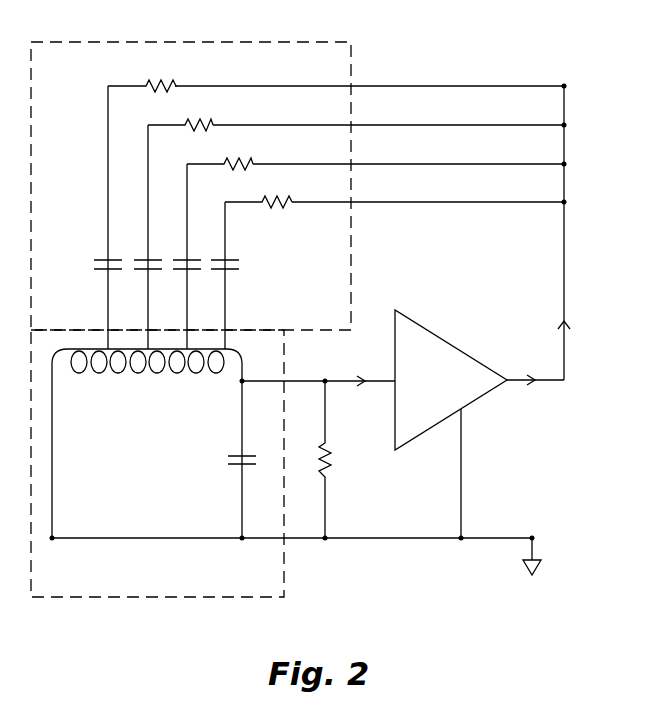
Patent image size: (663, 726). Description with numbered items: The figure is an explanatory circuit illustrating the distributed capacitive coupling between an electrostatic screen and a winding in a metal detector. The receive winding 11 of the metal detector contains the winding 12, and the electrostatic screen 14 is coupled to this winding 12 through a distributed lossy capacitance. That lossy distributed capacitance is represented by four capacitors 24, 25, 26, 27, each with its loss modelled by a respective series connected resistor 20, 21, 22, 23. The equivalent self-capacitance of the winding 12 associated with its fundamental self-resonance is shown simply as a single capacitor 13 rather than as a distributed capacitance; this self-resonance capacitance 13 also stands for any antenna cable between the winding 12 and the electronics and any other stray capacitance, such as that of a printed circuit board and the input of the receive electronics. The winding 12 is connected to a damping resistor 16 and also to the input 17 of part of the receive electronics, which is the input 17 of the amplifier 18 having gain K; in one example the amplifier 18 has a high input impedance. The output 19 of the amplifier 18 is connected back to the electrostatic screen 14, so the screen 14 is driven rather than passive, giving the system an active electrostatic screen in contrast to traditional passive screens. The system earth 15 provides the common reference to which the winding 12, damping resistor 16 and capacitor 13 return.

The receive winding 11 is at (110, 597).
The winding 12 is at (155, 372).
The capacitor 13 is at (232, 455).
The electrostatic screen 14 is at (352, 70).
The system earth 15 is at (536, 568).
The damping resistor 16 is at (331, 462).
The input 17 is at (300, 380).
The amplifier 18 is at (455, 343).
The output 19 is at (568, 348).
The resistor 20 is at (282, 198).
The resistor 21 is at (243, 160).
The resistor 22 is at (204, 120).
The resistor 23 is at (165, 82).
The capacitor 24 is at (232, 270).
The capacitor 25 is at (192, 270).
The capacitor 26 is at (141, 258).
The capacitor 27 is at (101, 258).